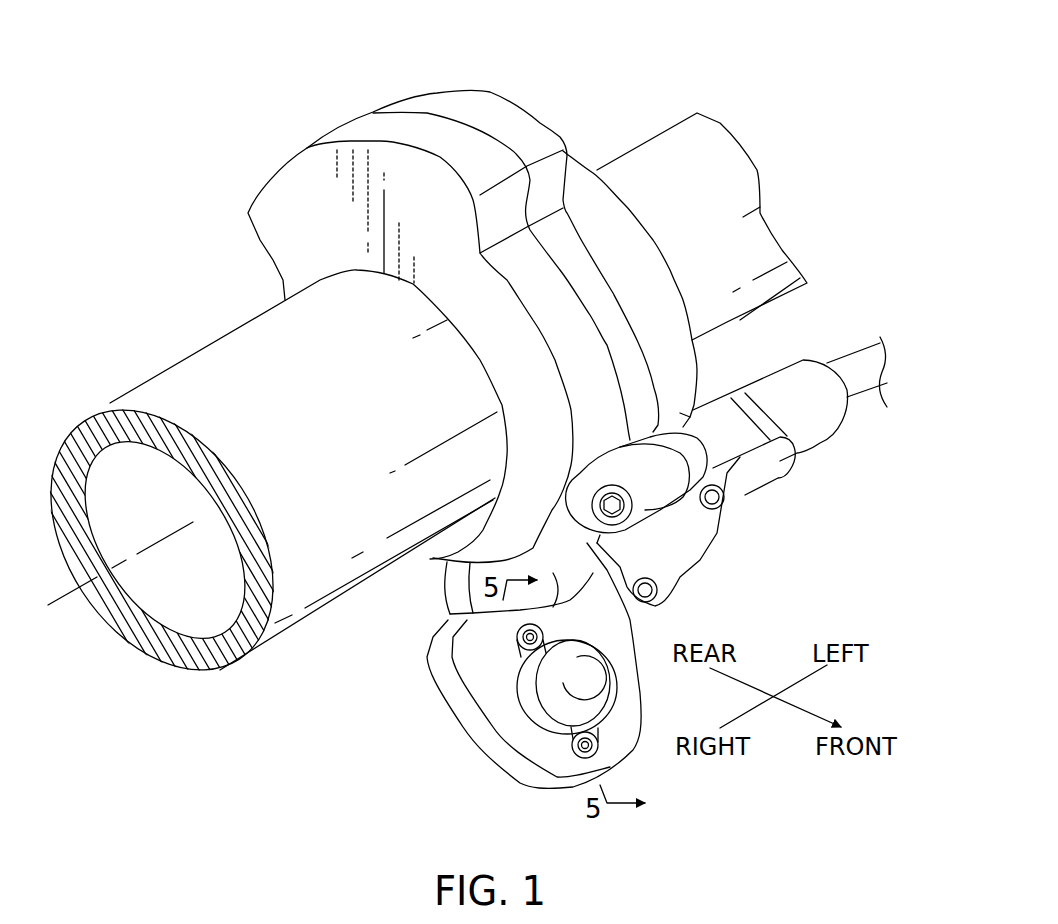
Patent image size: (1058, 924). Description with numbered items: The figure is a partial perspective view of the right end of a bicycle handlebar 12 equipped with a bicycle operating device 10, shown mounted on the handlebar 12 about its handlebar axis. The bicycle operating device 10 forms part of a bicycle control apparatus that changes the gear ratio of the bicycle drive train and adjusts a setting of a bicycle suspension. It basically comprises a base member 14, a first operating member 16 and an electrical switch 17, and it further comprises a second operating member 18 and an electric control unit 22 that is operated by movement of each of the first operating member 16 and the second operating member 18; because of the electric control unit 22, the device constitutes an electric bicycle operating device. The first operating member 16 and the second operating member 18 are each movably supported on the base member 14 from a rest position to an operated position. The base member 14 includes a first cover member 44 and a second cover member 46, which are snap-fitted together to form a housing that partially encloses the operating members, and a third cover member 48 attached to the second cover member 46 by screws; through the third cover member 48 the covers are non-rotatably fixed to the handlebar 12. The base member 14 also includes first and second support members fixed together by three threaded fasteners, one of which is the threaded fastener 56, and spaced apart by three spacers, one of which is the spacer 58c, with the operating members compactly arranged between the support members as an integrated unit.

The bicycle operating device 10 is at (529, 84).
The bicycle handlebar 12 is at (637, 147).
The base member 14 is at (650, 227).
The first operating member 16 is at (460, 720).
The electrical switch 17 is at (621, 701).
The second operating member 18 is at (438, 606).
The electric control unit 22 is at (778, 486).
The first cover member 44 is at (442, 105).
The second cover member 46 is at (388, 133).
The third cover member 48 is at (668, 270).
The threaded fastener 56 is at (590, 507).
The spacer 58c is at (657, 470).